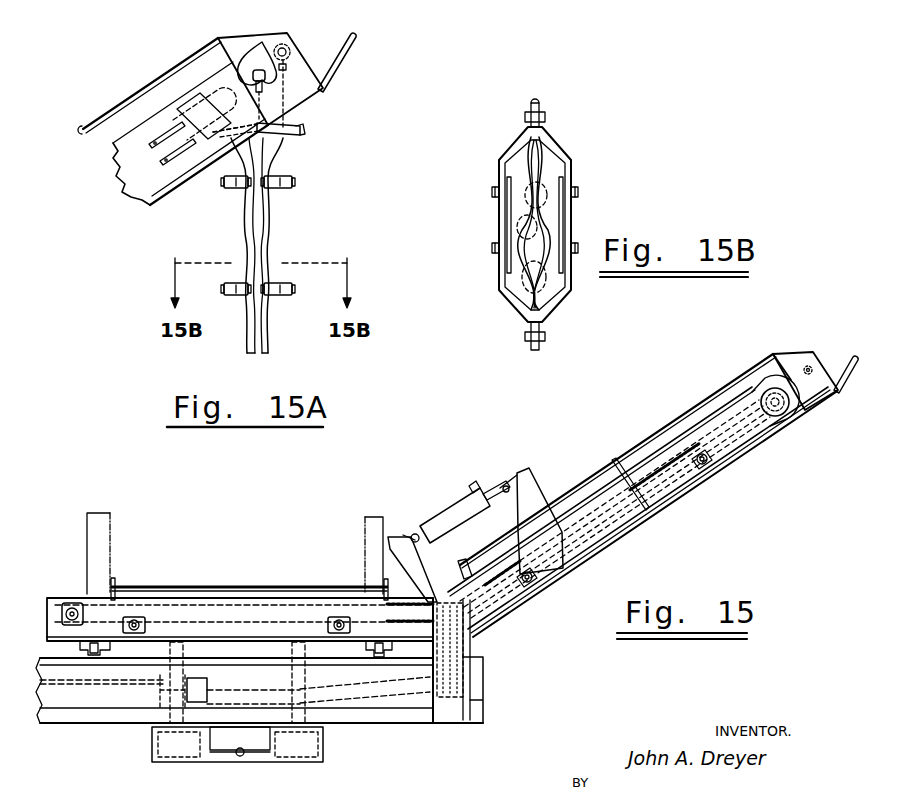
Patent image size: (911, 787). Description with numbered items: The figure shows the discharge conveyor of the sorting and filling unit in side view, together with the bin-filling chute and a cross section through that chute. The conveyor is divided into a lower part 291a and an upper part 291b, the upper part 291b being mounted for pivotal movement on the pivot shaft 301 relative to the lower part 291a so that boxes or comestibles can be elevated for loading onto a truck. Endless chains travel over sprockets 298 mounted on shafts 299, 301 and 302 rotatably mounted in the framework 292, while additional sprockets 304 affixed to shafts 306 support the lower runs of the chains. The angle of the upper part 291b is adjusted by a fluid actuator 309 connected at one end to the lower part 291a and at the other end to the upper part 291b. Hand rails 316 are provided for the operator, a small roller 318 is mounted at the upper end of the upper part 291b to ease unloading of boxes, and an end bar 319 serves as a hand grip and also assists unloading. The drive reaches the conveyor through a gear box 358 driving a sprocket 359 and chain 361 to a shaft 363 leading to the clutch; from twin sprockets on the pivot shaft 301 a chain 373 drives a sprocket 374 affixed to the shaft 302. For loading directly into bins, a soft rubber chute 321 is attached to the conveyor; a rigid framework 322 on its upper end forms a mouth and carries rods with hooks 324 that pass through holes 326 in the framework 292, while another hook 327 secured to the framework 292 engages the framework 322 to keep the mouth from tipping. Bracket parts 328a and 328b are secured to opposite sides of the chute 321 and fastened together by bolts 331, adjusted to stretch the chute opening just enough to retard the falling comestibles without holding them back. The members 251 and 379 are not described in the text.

In FIG. 15, the frame beam 251 is at (116, 717).
In FIG. 15, the lower conveyor part 291a is at (223, 559).
In FIG. 15, the upper conveyor part 291b is at (584, 458).
In FIG. 15A, the framework 292 is at (290, 50).
In FIG. 15, the sprockets 298 is at (92, 590).
In FIG. 15, the shaft 299 is at (70, 606).
In FIG. 15, the pivot shaft 301 is at (447, 600).
In FIG. 15, the shaft 302 is at (762, 387).
In FIG. 15, the additional sprockets 304 is at (157, 616).
In FIG. 15, the shafts 306 is at (130, 616).
In FIG. 15, the fluid actuator 309 is at (441, 525).
In FIG. 15A, the hand rails 316 is at (128, 100).
In FIG. 15, the hand rails 316 is at (327, 584).
In FIG. 15A, the small roller 318 is at (289, 34).
In FIG. 15, the small roller 318 is at (803, 364).
In FIG. 15A, the end bar 319 is at (357, 35).
In FIG. 15, the end bar 319 is at (853, 357).
In FIG. 15A, the chute 321 is at (284, 233).
In FIG. 15B, the chute 321 is at (551, 226).
In FIG. 15A, the rigid framework 322 is at (300, 130).
In FIG. 15A, the hooks 324 is at (262, 43).
In FIG. 15A, the holes 326 is at (255, 58).
In FIG. 15A, the hook 327 is at (318, 105).
In FIG. 15A, the bracket part 328a is at (286, 176).
In FIG. 15B, the bracket part 328a is at (558, 147).
In FIG. 15A, the bracket part 328b is at (238, 183).
In FIG. 15B, the bracket part 328b is at (513, 145).
In FIG. 15B, the bolts 331 is at (577, 190).
In FIG. 15, the gear box 358 is at (212, 684).
In FIG. 15, the sprocket 359 is at (226, 704).
In FIG. 15, the chain 361 is at (358, 678).
In FIG. 15, the shaft 363 is at (448, 705).
In FIG. 15, the chain 373 is at (617, 528).
In FIG. 15, the sprocket 374 is at (777, 430).
In FIG. 15, the support bracket 379 is at (549, 542).